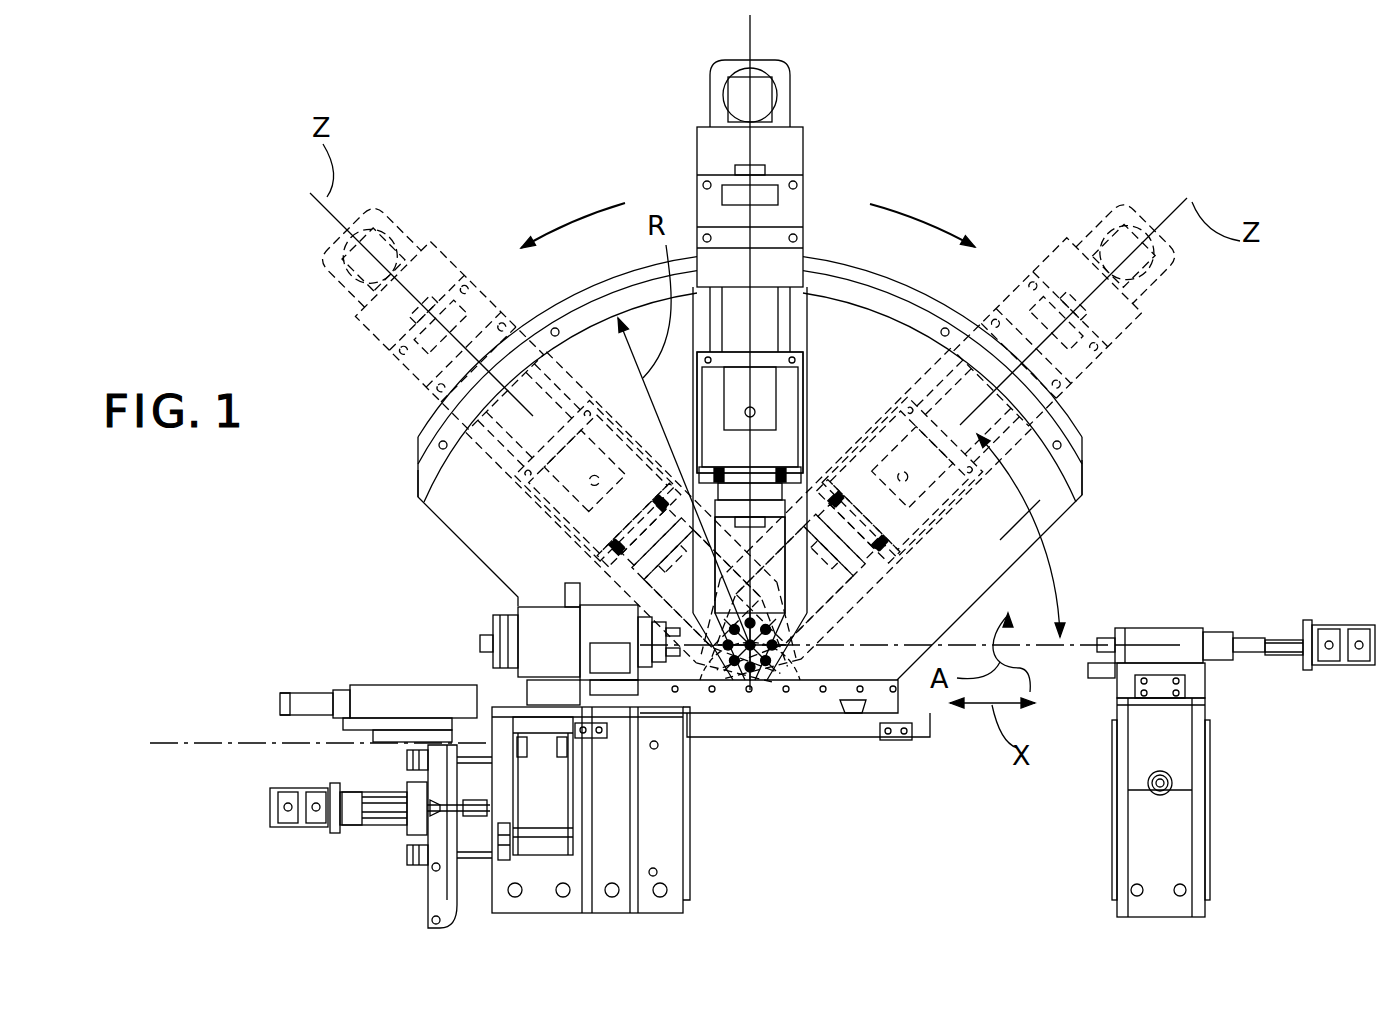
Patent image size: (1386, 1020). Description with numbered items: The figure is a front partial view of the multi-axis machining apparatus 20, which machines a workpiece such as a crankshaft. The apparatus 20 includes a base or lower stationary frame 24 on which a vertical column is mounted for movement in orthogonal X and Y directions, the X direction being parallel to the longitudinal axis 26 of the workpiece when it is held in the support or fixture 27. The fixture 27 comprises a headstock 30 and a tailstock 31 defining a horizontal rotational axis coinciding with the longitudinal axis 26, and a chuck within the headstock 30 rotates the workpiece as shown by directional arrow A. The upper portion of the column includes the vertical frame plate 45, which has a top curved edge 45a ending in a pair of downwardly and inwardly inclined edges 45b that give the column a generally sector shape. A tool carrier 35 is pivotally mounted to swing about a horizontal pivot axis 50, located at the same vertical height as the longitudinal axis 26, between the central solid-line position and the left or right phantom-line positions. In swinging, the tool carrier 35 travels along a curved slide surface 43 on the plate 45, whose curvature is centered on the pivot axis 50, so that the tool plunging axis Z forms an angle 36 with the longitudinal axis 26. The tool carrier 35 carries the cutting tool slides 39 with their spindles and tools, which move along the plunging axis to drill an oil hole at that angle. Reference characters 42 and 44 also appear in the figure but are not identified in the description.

The multi-axis machining apparatus 20 is at (1165, 495).
The base or lower stationary frame 24 is at (1212, 815).
The longitudinal axis 26 is at (885, 645).
The support or fixture 27 is at (1231, 723).
The headstock 30 is at (530, 562).
The tailstock 31 is at (1135, 628).
The tool carrier 35 is at (520, 305).
The angle 36 is at (1047, 493).
The cutting tool slides 39 is at (792, 415).
The tool 42 is at (830, 525).
The curved slide surface 43 is at (525, 332).
The pivoting direction 44 is at (898, 330).
The vertical stack frame plate 45 is at (1057, 535).
The top curved edge 45a is at (1048, 495).
The downwardly and inwardly inclined edges 45b is at (467, 547).
The pivot axis 50 is at (728, 688).